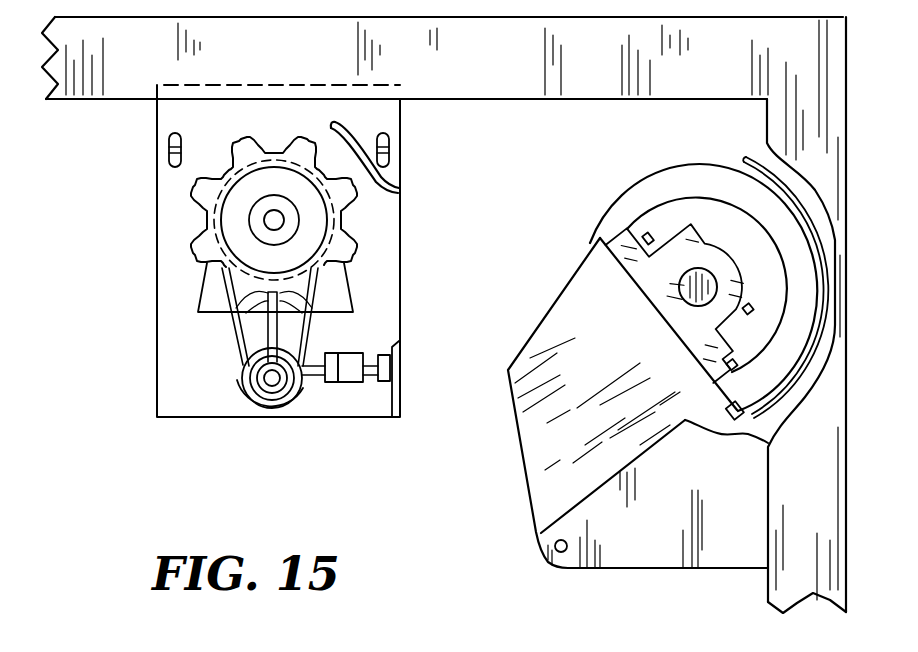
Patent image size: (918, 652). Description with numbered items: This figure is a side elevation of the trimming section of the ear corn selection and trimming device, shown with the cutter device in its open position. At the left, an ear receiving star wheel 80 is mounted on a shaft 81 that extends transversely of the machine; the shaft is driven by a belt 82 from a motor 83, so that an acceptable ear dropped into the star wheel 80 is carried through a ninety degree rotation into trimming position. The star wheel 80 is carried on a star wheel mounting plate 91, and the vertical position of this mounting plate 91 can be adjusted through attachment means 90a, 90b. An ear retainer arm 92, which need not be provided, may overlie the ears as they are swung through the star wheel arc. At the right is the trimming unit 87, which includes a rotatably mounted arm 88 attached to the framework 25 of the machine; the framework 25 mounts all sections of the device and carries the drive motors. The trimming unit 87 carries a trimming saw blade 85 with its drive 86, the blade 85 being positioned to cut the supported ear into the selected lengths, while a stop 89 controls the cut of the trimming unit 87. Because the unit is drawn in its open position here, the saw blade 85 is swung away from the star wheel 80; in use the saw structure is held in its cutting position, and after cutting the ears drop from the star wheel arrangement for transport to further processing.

The framework 25 is at (823, 507).
The star wheel 80 is at (198, 252).
The shaft 81 is at (280, 222).
The belt 82 is at (237, 338).
The motor 83 is at (248, 400).
The trimming saw blade 85 is at (601, 222).
The drive 86 is at (662, 305).
The trimming unit 87 is at (612, 181).
The rotatably mounted arm 88 is at (540, 478).
The stop 89 is at (396, 393).
The attachment means 90a is at (169, 150).
The attachment means 90b is at (392, 156).
The star wheel mounting plate 91 is at (157, 202).
The ear retainer arm 92 is at (386, 180).